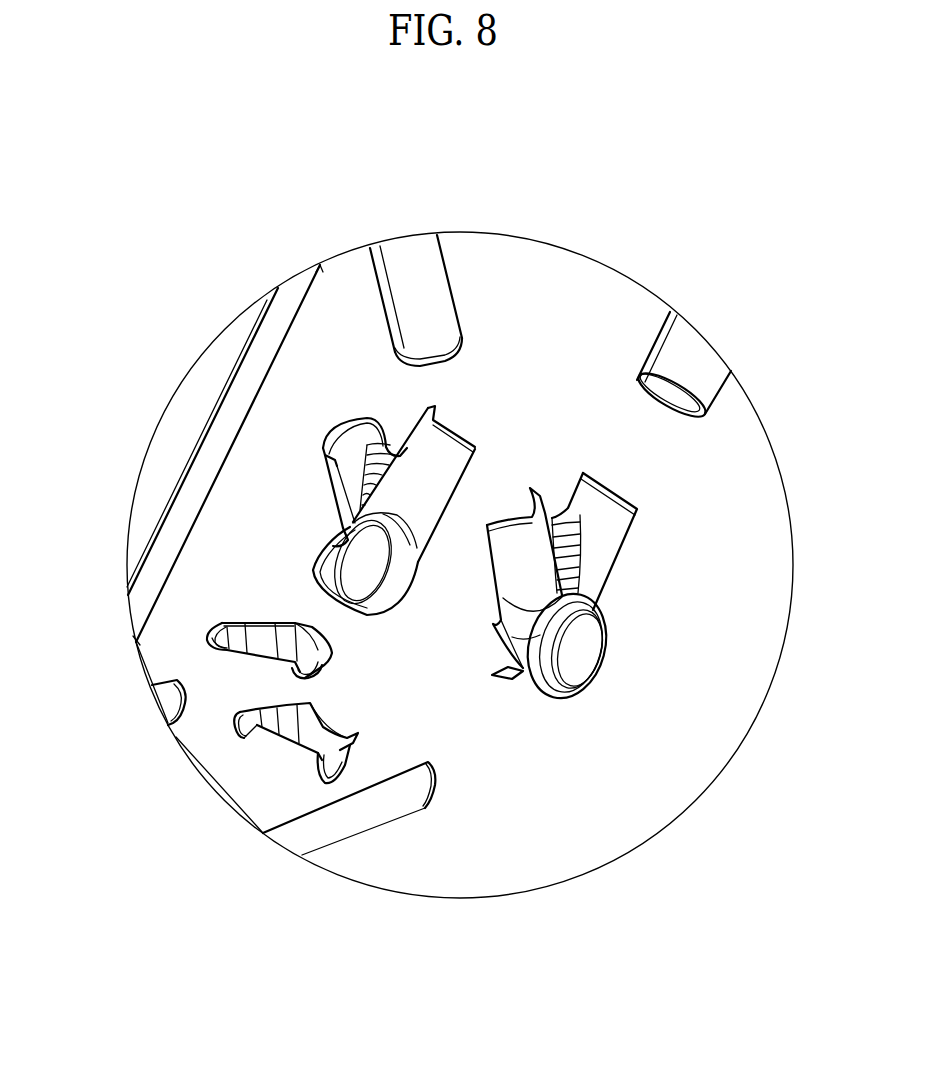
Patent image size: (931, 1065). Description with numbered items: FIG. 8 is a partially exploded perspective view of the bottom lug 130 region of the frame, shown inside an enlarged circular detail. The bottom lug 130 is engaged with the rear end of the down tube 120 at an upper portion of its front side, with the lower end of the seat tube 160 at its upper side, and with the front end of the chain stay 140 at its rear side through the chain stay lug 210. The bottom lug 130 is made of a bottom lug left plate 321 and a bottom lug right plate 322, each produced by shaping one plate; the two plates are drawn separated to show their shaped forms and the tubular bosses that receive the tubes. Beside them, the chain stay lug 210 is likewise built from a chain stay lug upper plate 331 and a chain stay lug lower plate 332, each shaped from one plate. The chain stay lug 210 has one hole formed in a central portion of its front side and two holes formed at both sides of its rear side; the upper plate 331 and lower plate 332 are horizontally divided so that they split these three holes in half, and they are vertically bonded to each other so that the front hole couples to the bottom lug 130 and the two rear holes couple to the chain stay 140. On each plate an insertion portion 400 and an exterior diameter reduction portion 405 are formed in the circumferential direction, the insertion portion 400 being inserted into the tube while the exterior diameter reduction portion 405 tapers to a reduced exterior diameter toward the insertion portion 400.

The down tube 120 is at (690, 347).
The bottom lug 130 is at (475, 616).
The chain stay 140 is at (167, 700).
The seat tube 160 is at (443, 300).
The chain stay lug 210 is at (238, 766).
The bottom lug left plate 321 is at (397, 592).
The bottom lug right plate 322 is at (537, 690).
The chain stay lug upper plate 331 is at (236, 647).
The chain stay lug lower plate 332 is at (280, 735).
The insertion portion 400 is at (220, 624).
The exterior diameter reduction portion 405 is at (225, 624).